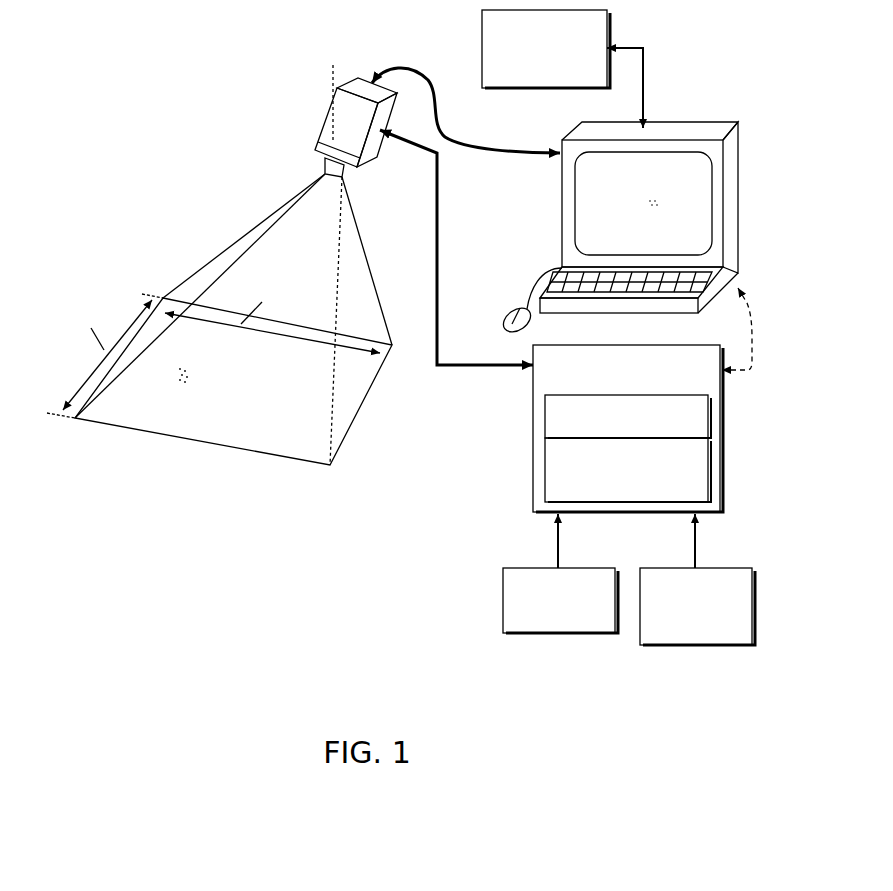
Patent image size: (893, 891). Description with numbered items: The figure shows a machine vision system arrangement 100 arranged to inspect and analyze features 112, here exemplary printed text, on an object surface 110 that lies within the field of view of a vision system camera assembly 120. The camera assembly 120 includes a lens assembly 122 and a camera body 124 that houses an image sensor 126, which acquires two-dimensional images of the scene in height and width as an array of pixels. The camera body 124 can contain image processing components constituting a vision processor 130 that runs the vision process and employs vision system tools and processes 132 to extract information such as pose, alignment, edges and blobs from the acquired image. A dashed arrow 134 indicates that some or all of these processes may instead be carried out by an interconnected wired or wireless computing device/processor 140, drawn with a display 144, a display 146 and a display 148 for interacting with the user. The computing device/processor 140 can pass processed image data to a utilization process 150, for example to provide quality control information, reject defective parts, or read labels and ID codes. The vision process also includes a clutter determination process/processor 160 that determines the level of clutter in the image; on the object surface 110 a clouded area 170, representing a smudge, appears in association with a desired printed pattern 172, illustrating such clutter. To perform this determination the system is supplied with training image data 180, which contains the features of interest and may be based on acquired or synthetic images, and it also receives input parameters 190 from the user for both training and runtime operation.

The machine vision system arrangement 100 is at (288, 62).
The object surface 110 is at (258, 414).
The features 112 is at (153, 417).
The vision system camera assembly 120 is at (339, 125).
The lens assembly 122 is at (343, 168).
The camera body 124 is at (328, 110).
The image sensor 126 is at (310, 147).
The vision processor 130 is at (628, 428).
The vision system tools and processes 132 is at (628, 416).
The dashed arrow 134 is at (745, 312).
The computing device/processor 140 is at (629, 231).
The display 144 is at (576, 291).
The display 146 is at (516, 308).
The display 148 is at (593, 208).
The utilization process 150 is at (546, 49).
The clutter determination process/processor 160 is at (628, 470).
The clouded area 170 is at (140, 407).
The desired printed pattern 172 is at (194, 377).
The training image data 180 is at (560, 573).
The input parameters 190 is at (697, 579).